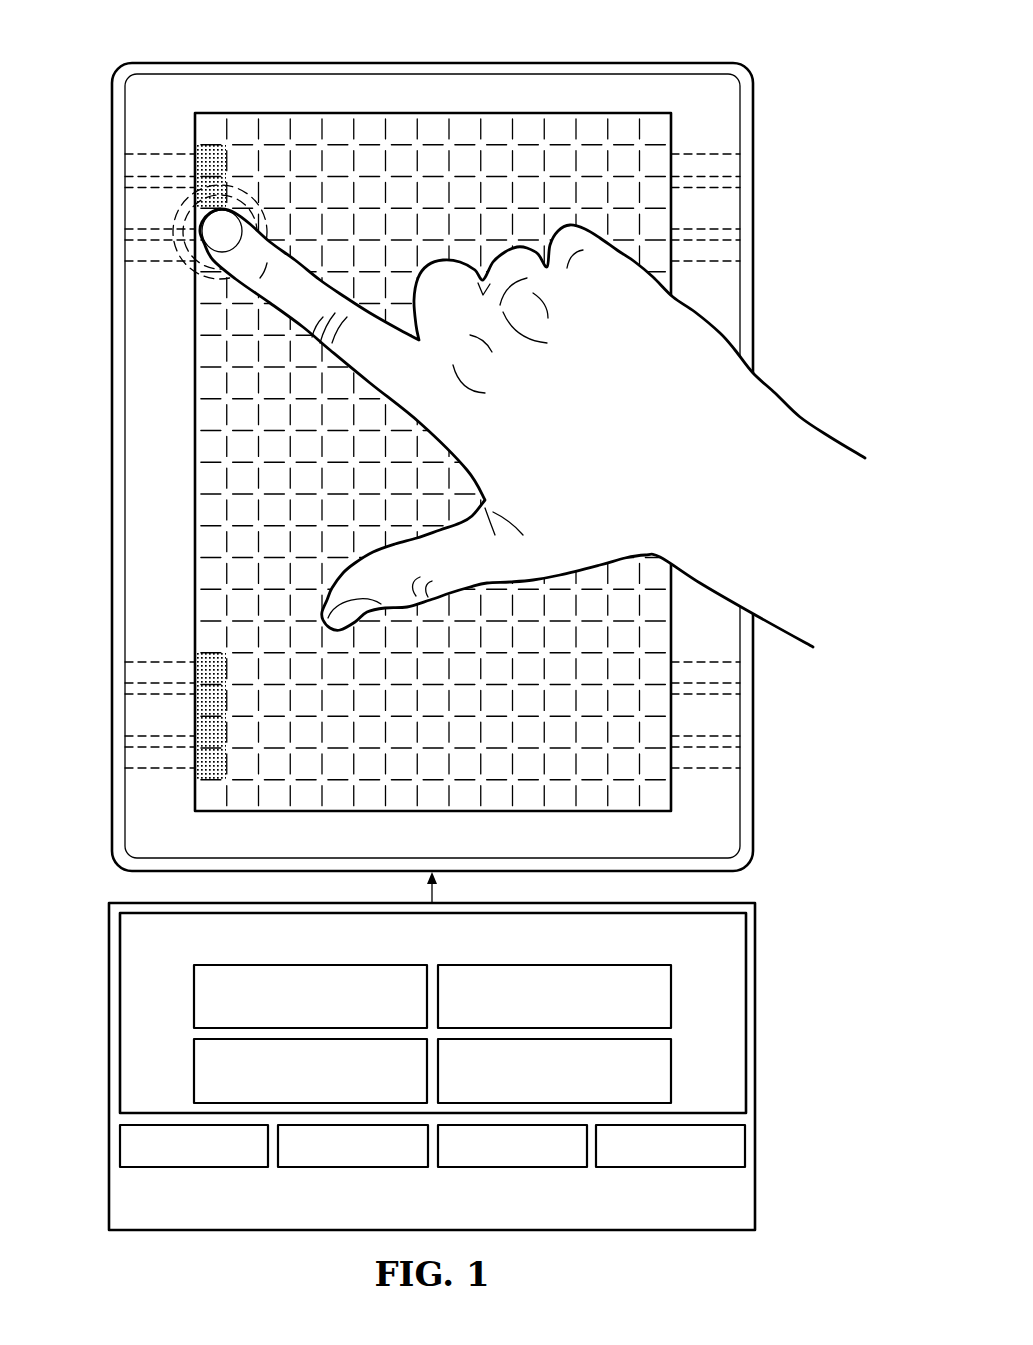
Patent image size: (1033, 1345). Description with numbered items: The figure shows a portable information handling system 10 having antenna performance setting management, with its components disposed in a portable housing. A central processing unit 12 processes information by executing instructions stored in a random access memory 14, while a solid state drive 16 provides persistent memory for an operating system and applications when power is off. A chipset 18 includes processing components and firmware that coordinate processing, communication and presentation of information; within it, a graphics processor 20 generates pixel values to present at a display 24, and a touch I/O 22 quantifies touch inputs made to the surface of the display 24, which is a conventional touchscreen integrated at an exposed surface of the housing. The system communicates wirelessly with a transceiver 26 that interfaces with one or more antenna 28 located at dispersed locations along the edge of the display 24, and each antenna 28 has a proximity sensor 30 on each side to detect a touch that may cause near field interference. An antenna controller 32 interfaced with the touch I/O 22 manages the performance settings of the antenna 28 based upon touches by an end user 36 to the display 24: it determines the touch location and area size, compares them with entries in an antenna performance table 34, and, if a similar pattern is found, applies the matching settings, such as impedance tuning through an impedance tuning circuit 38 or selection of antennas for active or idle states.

The portable information handling system 10 is at (580, 60).
The central processing unit 12 is at (196, 1168).
The random access memory 14 is at (353, 1168).
The solid state drive 16 is at (512, 1168).
The chipset 18 is at (503, 955).
The graphics processor 20 is at (194, 997).
The touch I/O 22 is at (194, 1071).
The display 24 is at (189, 440).
The transceiver 26 is at (670, 1168).
The antenna 28 is at (133, 207).
The proximity sensor 30 is at (157, 163).
The antenna controller 32 is at (671, 995).
The antenna performance table 34 is at (671, 1075).
The end user 36 is at (770, 388).
The impedance tuning circuit 38 is at (213, 158).